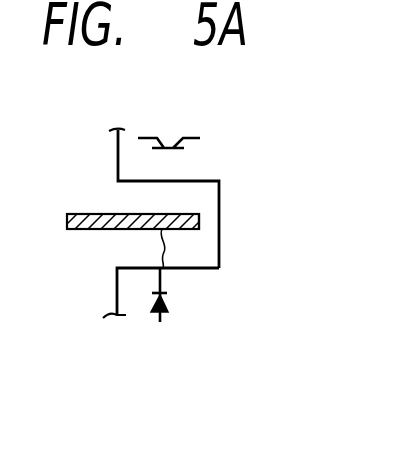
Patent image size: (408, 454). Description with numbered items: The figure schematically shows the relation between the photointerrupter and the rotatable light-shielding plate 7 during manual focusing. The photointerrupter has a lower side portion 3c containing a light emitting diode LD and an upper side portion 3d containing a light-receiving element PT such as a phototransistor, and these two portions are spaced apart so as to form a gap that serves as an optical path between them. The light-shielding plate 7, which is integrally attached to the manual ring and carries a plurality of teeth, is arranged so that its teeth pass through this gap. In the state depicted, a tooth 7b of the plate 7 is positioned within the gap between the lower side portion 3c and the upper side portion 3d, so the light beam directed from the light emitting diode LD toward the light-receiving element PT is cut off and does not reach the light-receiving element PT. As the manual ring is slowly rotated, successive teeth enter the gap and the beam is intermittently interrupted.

The lower side portion 3c is at (190, 268).
The upper side portion 3d is at (192, 122).
The light-shielding plate 7 is at (100, 212).
The tooth 7b is at (200, 217).
The light-receiving element PT is at (167, 115).
The light emitting diode LD is at (159, 316).